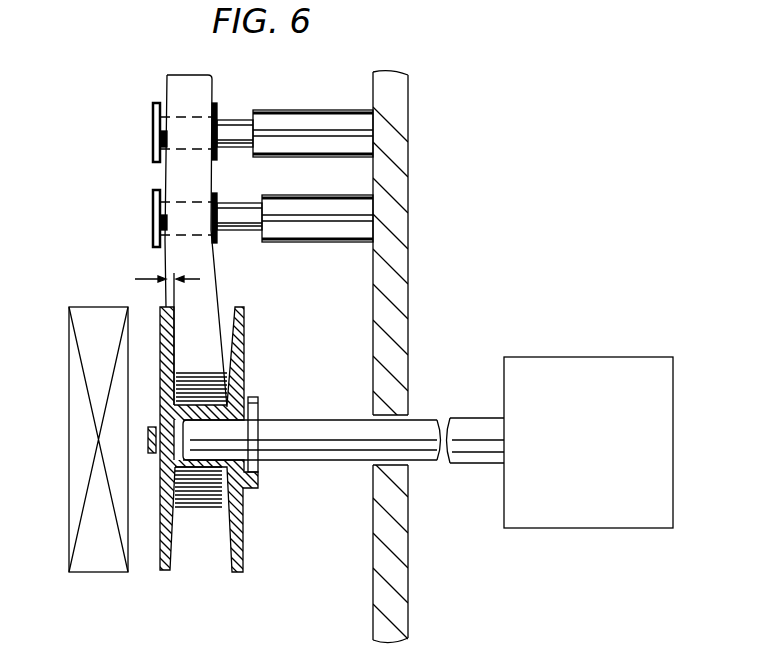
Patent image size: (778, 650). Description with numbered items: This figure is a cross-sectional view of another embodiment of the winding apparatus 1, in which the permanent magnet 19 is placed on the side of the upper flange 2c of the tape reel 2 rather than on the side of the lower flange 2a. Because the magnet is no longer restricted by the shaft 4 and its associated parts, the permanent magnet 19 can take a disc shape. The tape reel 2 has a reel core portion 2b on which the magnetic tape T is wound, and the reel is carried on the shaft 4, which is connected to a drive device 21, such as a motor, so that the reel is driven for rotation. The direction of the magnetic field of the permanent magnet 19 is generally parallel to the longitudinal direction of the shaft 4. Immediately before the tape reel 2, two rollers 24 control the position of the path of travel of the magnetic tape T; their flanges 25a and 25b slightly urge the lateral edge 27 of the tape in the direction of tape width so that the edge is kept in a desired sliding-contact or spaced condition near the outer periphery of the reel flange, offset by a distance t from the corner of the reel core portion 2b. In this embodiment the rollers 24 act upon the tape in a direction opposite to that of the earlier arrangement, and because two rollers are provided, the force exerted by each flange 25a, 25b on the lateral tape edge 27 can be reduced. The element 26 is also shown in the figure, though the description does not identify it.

The winding apparatus 1 is at (395, 619).
The tape reel 2 is at (271, 458).
The flange 2a is at (240, 340).
The reel core portion 2b is at (242, 493).
The flange 2c is at (167, 556).
The shaft 4 is at (336, 432).
The permanent magnet 19 is at (75, 340).
The drive device 21 is at (540, 368).
The roller 24 is at (160, 203).
The flange 25a is at (158, 118).
The flange 25b is at (218, 106).
The stop 26 is at (153, 457).
The lateral edge 27 is at (200, 292).
The magnetic tape T is at (205, 87).
The offset distance t is at (167, 269).